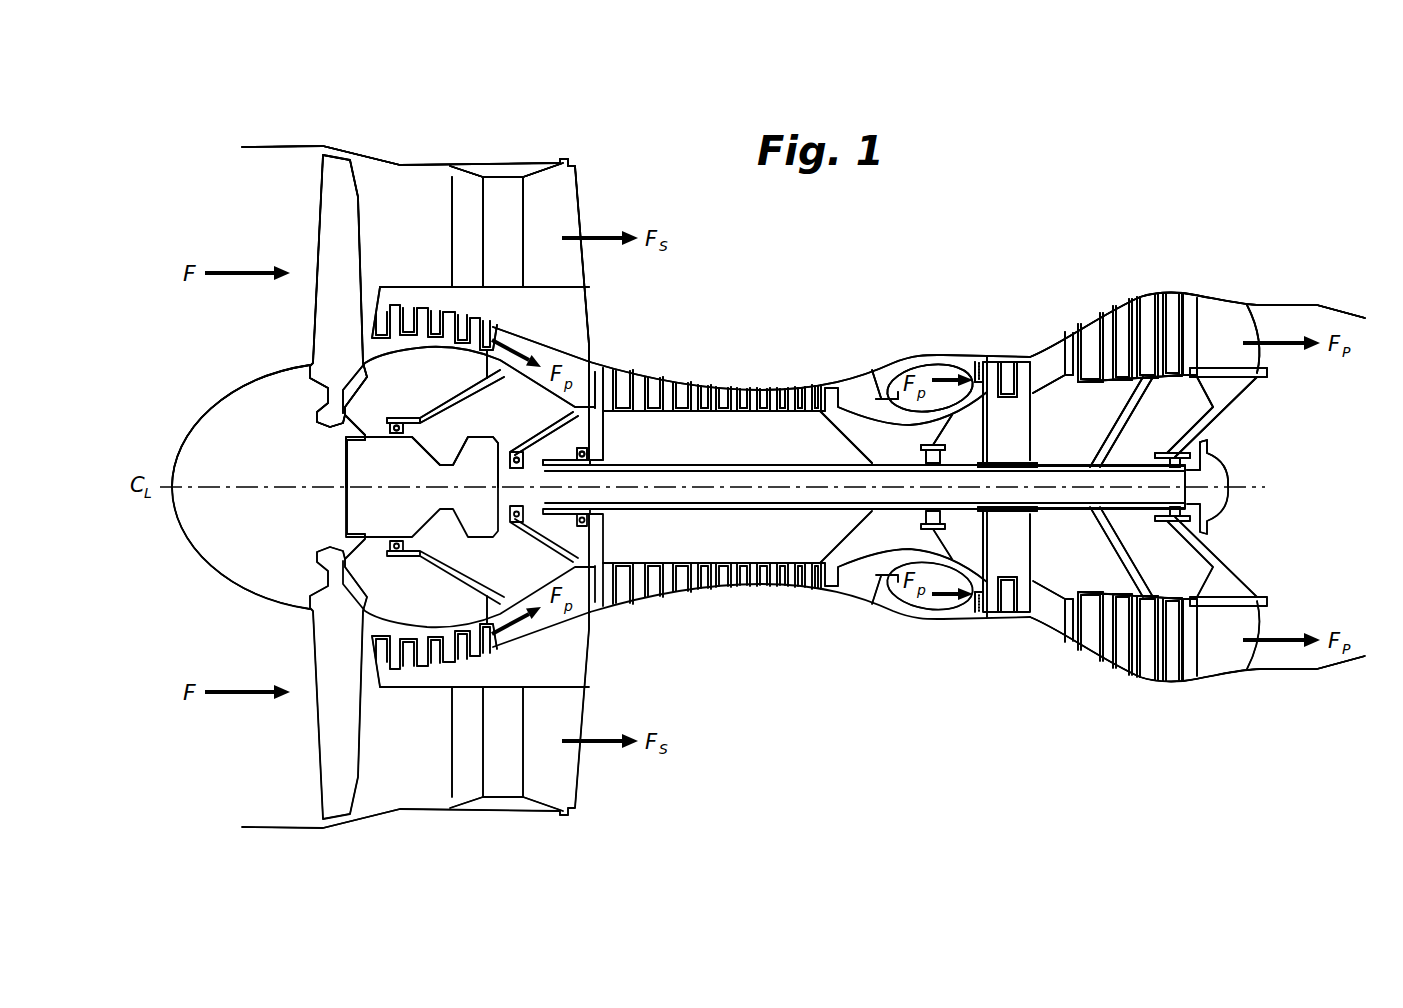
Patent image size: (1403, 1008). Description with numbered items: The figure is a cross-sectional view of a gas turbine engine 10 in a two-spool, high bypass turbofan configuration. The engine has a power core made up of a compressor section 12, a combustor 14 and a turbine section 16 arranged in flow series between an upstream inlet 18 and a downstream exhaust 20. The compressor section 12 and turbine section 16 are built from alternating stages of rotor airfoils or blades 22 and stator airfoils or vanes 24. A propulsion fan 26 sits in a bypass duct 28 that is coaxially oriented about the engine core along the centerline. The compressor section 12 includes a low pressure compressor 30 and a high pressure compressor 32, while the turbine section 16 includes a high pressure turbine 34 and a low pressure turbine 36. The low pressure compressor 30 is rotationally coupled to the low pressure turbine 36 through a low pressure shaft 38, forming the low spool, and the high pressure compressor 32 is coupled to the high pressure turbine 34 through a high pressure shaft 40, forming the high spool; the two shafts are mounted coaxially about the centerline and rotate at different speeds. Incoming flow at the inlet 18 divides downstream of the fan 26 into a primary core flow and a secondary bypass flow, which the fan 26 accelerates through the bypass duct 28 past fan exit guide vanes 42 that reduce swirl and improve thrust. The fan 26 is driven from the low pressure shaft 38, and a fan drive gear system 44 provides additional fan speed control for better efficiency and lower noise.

The gas turbine engine 10 is at (208, 120).
The compressor section 12 is at (830, 837).
The combustor 14 is at (930, 357).
The turbine section 16 is at (1195, 720).
The inlet 18 is at (229, 366).
The exhaust 20 is at (1309, 433).
The rotor airfoils 22 is at (645, 378).
The stator airfoils 24 is at (683, 381).
The propulsion fan 26 is at (333, 231).
The bypass duct 28 is at (427, 233).
The low pressure compressor 30 is at (537, 646).
The high pressure compressor 32 is at (731, 598).
The high pressure turbine 34 is at (1016, 635).
The low pressure turbine 36 is at (1086, 670).
The low pressure shaft 38 is at (757, 502).
The high pressure shaft 40 is at (843, 522).
The fan exit guide vanes 42 is at (450, 168).
The fan drive gear system 44 is at (484, 433).